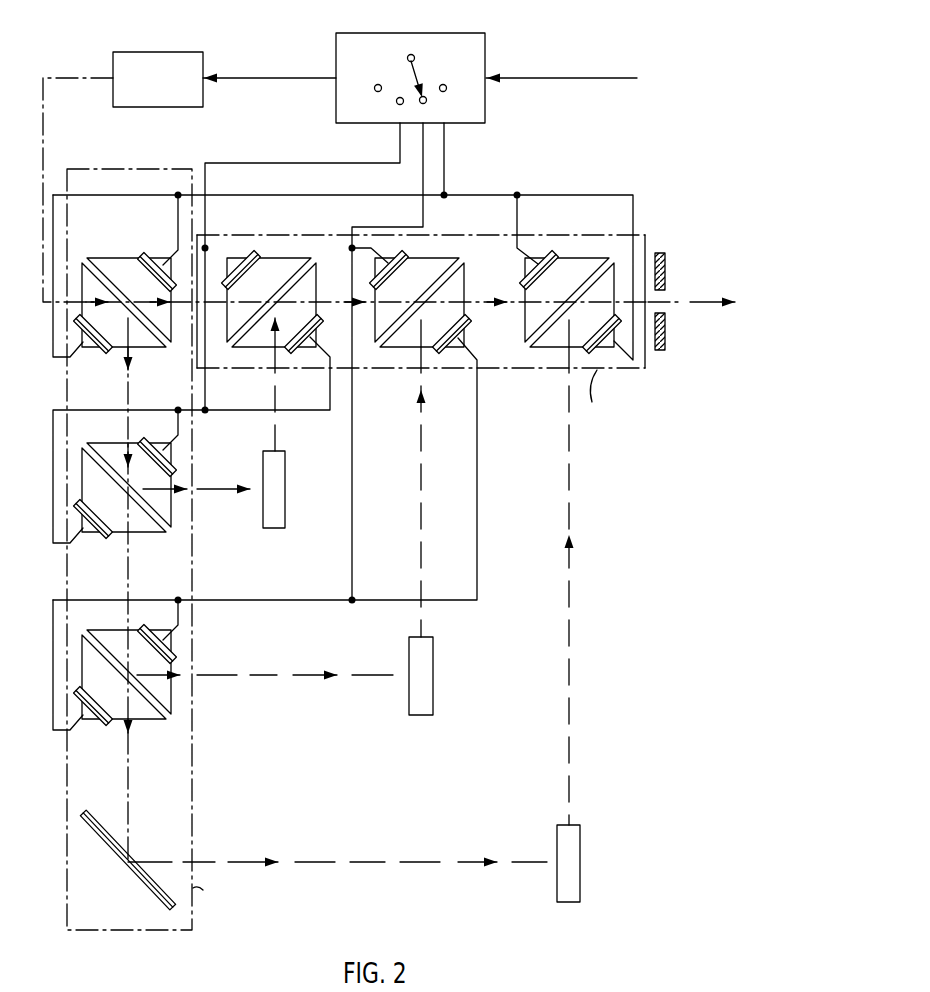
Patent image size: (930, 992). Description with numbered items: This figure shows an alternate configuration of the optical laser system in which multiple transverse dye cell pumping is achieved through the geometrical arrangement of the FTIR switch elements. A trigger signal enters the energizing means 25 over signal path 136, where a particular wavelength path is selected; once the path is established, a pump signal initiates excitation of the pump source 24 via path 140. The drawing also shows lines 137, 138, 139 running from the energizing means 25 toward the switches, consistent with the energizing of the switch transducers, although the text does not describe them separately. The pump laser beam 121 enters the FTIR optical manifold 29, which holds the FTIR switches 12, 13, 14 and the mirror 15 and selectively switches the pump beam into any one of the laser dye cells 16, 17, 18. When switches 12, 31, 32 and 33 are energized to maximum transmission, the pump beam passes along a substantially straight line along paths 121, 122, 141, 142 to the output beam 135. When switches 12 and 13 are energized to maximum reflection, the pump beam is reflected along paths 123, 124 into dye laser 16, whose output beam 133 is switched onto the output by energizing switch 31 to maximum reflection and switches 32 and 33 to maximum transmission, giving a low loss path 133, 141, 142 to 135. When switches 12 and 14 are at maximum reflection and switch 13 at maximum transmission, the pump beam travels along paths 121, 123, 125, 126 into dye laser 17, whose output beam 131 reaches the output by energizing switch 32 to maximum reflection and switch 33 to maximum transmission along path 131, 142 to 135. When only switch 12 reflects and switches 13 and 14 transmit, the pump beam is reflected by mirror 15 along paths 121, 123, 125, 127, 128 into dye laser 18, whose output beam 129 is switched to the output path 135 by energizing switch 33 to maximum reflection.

The pump source 24 is at (155, 51).
The energizing means 25 is at (487, 49).
The FTIR switch 12 is at (120, 257).
The FTIR switch 13 is at (106, 443).
The FTIR switch 14 is at (106, 630).
The mirror 15 is at (118, 853).
The dye laser source 16 is at (273, 528).
The dye laser source 17 is at (421, 715).
The dye laser source 18 is at (568, 902).
The FTIR optical manifold 29 is at (145, 930).
The FTIR switch 31 is at (304, 256).
The FTIR switch 32 is at (457, 256).
The FTIR switch 33 is at (590, 256).
The pump laser beam 121 is at (43, 137).
The path 122 is at (175, 305).
The path 123 is at (128, 397).
The path 124 is at (228, 489).
The path 125 is at (130, 566).
The path 126 is at (258, 677).
The path 127 is at (130, 826).
The path 128 is at (265, 862).
The output beam 129 is at (571, 788).
The output beam 131 is at (423, 555).
The output beam 133 is at (277, 390).
The output beam 135 is at (694, 303).
The signal path 136 is at (555, 80).
The control line 137 is at (322, 163).
The control line 138 is at (389, 195).
The control line 139 is at (413, 227).
The path 140 is at (275, 76).
The path 141 is at (333, 303).
The path 142 is at (494, 303).